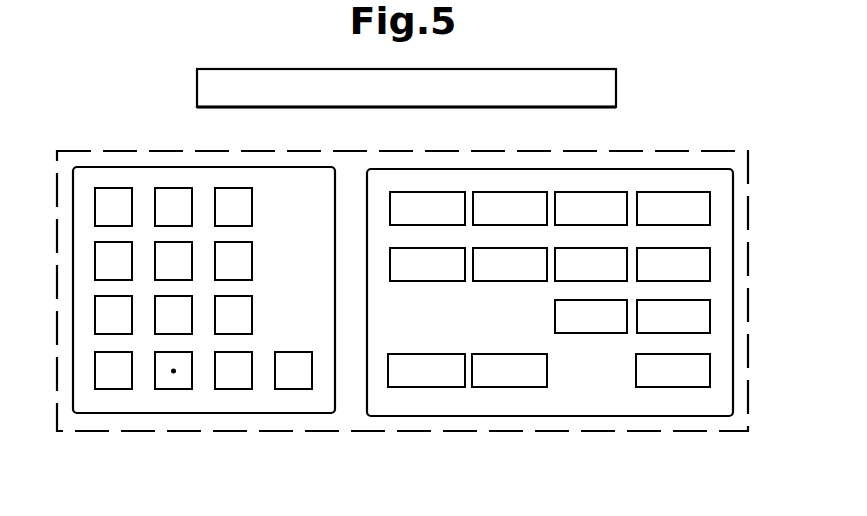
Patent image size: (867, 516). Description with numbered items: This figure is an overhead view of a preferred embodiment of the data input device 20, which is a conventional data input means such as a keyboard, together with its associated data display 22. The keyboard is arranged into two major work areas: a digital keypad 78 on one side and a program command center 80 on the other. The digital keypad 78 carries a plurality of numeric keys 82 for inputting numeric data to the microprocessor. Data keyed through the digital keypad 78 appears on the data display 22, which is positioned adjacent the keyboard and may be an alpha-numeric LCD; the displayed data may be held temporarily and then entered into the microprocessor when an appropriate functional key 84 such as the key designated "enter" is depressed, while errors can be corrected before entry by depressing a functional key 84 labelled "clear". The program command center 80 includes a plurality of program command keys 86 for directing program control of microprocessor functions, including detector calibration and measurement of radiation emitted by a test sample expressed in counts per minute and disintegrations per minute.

The data input device 20 is at (369, 441).
The data display 22 is at (478, 69).
The digital keypad 78 is at (176, 293).
The program command center 80 is at (577, 270).
The numeric keys 82 is at (95, 262).
The functional key 84 is at (290, 389).
The program command keys 86 is at (710, 264).